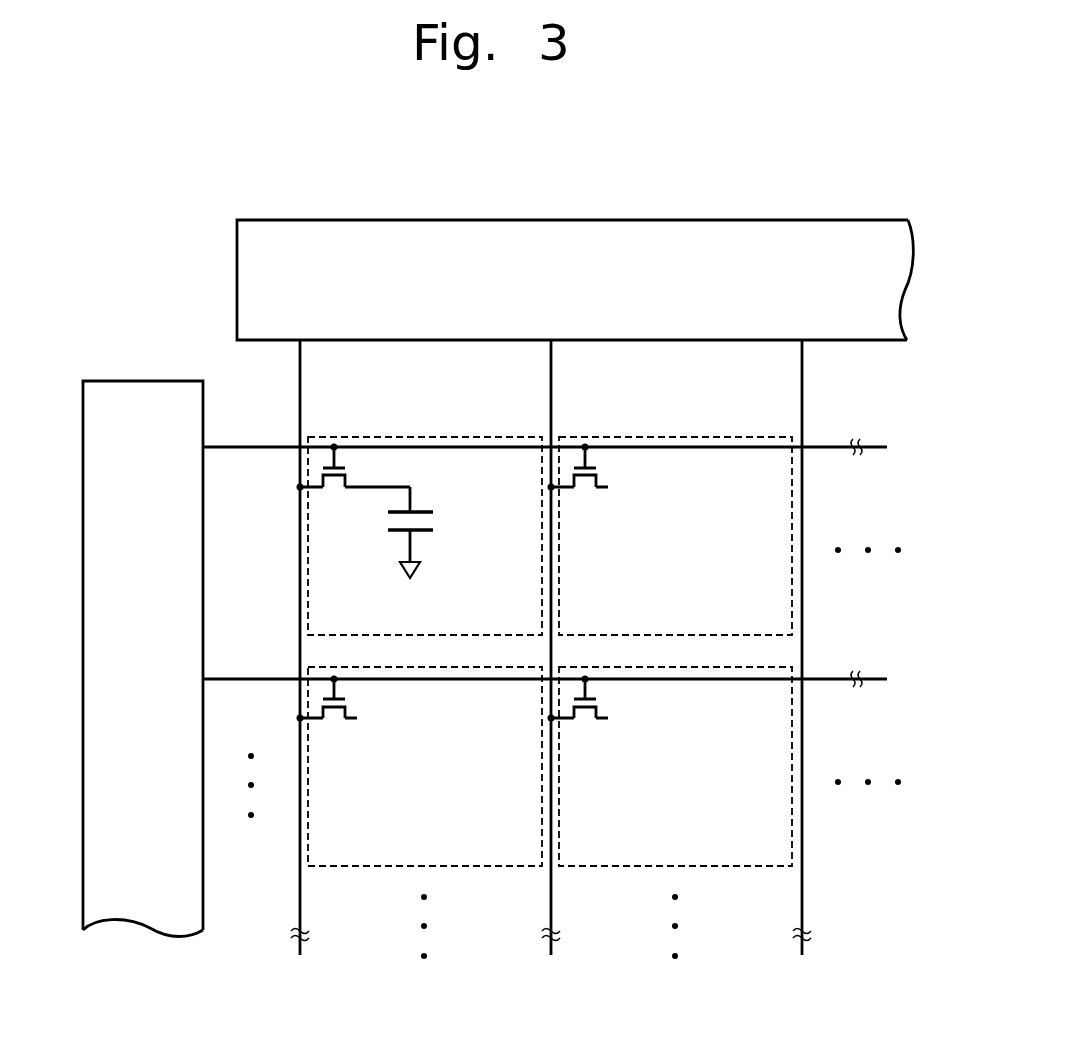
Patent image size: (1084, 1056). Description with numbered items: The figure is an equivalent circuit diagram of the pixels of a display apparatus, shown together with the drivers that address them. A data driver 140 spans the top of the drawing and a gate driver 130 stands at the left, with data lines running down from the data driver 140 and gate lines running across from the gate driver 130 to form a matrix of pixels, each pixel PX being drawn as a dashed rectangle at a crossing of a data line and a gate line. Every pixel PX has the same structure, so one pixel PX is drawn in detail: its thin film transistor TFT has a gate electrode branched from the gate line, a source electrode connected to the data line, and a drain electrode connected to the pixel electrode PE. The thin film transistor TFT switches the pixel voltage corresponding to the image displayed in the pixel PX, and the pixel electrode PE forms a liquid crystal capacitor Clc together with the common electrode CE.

The data driver 140 is at (783, 220).
The gate driver 130 is at (140, 931).
The thin film transistor TFT is at (349, 463).
The pixel PX is at (708, 437).
The pixel electrode PE is at (412, 511).
The liquid crystal capacitor Clc is at (426, 524).
The common electrode CE is at (412, 534).